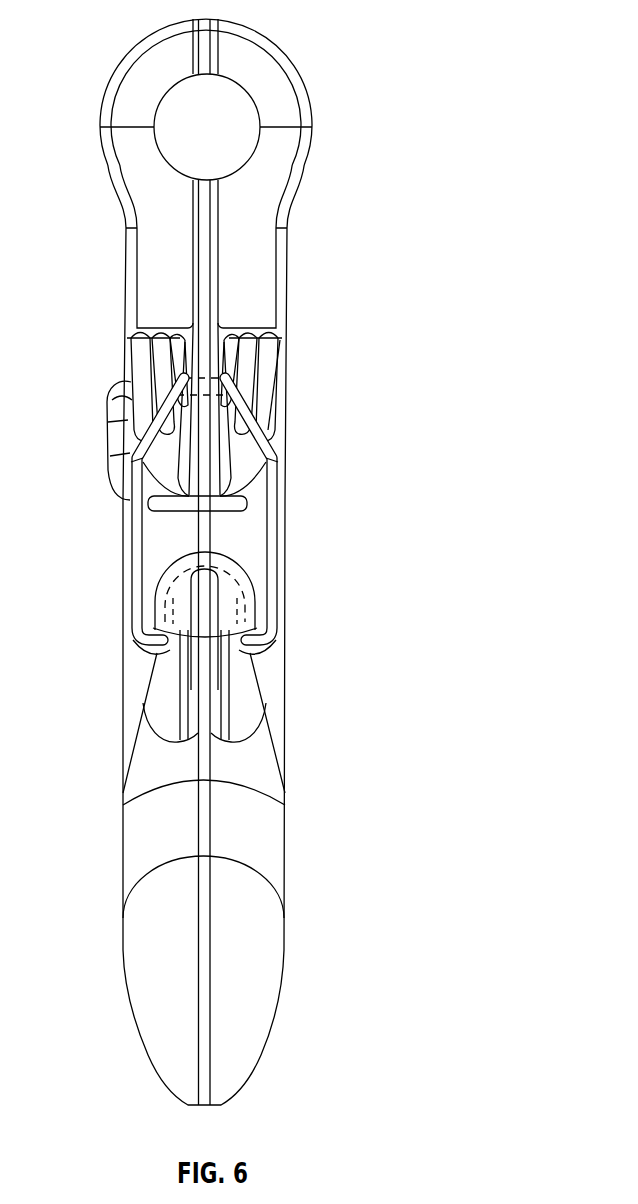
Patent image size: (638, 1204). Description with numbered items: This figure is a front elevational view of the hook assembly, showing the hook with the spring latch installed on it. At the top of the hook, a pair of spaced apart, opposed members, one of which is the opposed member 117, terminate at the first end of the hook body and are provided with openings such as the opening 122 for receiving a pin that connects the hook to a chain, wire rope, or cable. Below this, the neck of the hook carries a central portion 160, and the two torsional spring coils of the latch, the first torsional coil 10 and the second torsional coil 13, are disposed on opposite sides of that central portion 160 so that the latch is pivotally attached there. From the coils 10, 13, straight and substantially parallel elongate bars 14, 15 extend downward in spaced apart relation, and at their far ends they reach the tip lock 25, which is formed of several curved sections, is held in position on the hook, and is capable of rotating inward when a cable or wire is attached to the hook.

The opposed member 117 is at (267, 70).
The opening 122 is at (158, 108).
The first torsional coil 10 is at (130, 346).
The second torsional coil 13 is at (270, 353).
The central portion 160 is at (205, 448).
The elongate bar 14 is at (133, 558).
The elongate bar 15 is at (280, 568).
The tip lock 25 is at (177, 598).